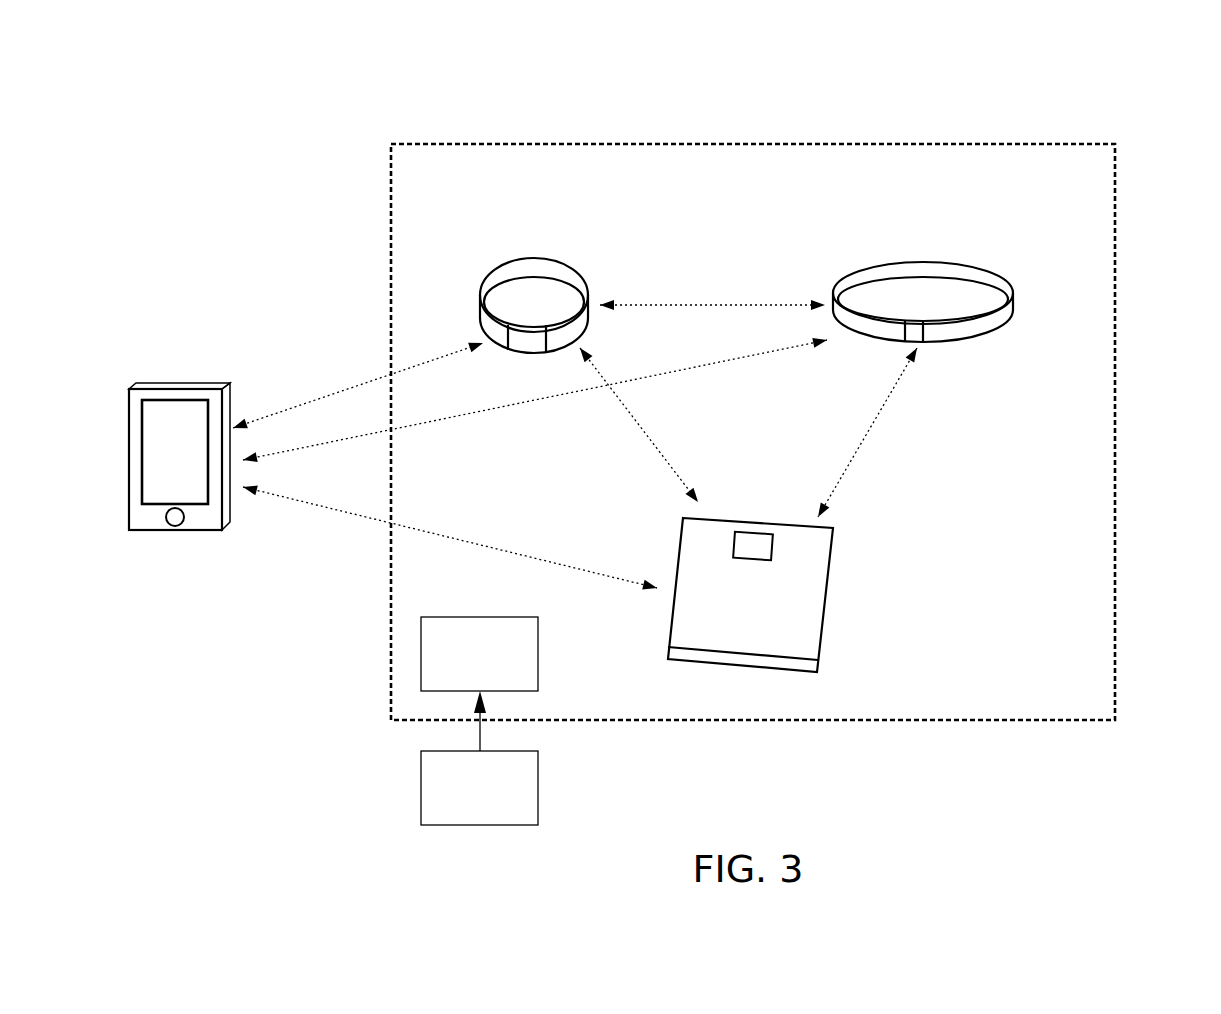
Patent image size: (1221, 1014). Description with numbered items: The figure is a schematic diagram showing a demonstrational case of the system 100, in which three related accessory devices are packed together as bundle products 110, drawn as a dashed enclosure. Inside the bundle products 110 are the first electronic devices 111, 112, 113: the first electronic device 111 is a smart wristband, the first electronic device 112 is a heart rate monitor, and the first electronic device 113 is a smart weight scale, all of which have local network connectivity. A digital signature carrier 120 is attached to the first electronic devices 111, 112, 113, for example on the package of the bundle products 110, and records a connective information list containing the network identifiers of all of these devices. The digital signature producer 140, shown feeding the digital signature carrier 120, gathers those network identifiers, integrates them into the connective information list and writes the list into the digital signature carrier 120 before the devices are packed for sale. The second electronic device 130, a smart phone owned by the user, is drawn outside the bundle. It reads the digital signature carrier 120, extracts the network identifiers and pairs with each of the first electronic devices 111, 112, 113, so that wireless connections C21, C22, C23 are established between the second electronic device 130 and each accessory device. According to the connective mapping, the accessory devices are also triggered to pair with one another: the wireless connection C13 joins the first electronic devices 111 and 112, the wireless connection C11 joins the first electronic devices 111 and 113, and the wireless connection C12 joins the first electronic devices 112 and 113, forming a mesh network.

The system 100 is at (1170, 72).
The bundle products 110 is at (968, 144).
The first electronic device 111 is at (556, 258).
The first electronic device 112 is at (945, 262).
The first electronic device 113 is at (757, 520).
The digital signature carrier 120 is at (460, 665).
The second electronic device 130 is at (185, 383).
The digital signature producer 140 is at (460, 799).
The wireless connection C11 is at (639, 425).
The wireless connection C12 is at (867, 432).
The wireless connection C13 is at (712, 305).
The wireless connection C21 is at (358, 385).
The wireless connection C22 is at (535, 400).
The wireless connection C23 is at (450, 538).